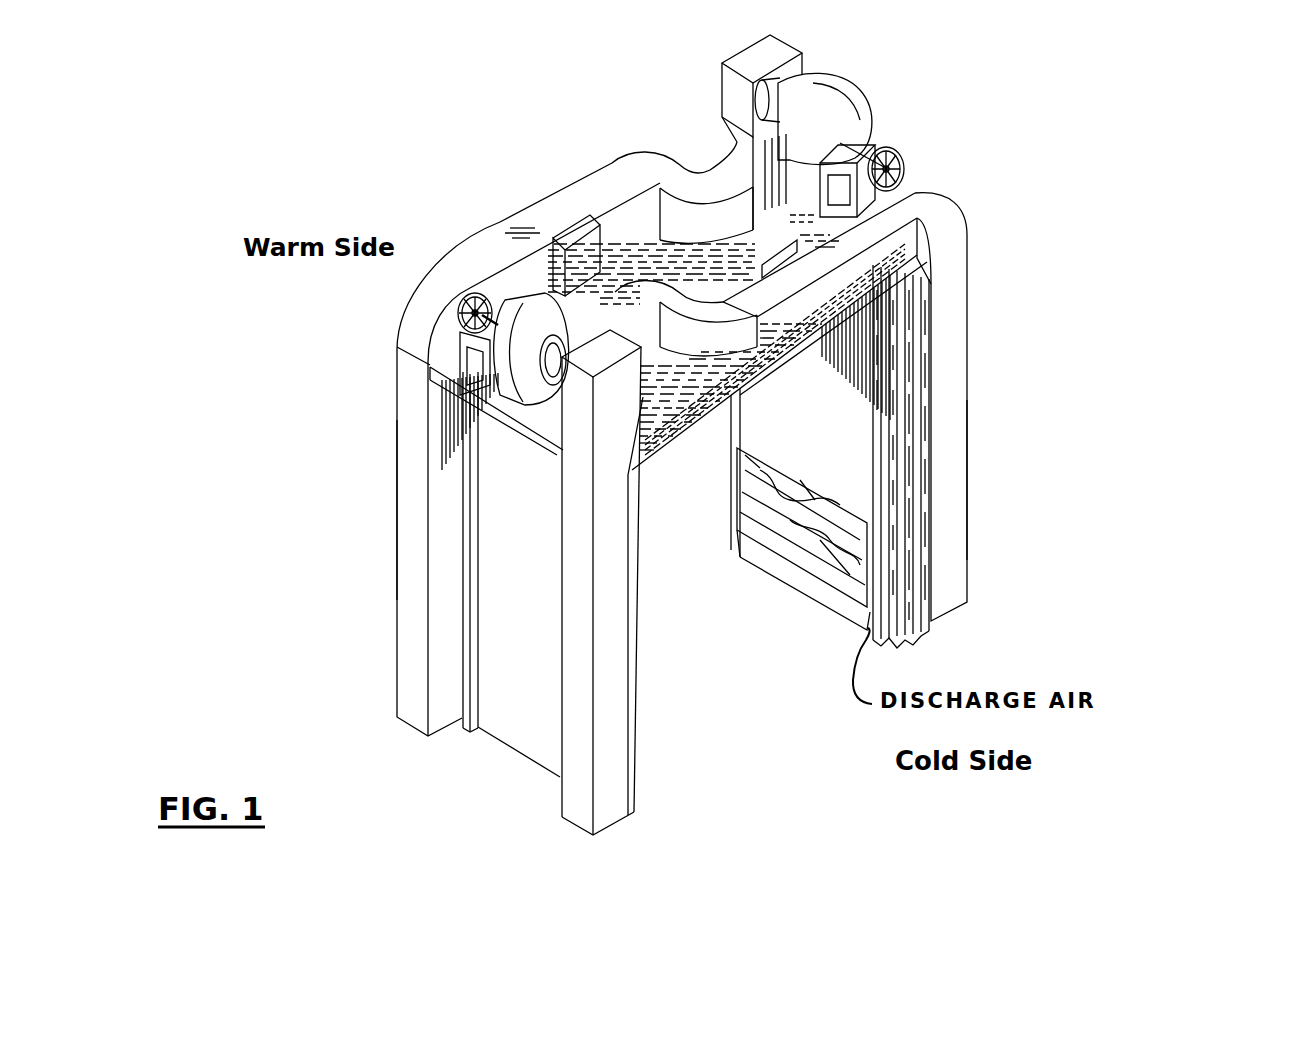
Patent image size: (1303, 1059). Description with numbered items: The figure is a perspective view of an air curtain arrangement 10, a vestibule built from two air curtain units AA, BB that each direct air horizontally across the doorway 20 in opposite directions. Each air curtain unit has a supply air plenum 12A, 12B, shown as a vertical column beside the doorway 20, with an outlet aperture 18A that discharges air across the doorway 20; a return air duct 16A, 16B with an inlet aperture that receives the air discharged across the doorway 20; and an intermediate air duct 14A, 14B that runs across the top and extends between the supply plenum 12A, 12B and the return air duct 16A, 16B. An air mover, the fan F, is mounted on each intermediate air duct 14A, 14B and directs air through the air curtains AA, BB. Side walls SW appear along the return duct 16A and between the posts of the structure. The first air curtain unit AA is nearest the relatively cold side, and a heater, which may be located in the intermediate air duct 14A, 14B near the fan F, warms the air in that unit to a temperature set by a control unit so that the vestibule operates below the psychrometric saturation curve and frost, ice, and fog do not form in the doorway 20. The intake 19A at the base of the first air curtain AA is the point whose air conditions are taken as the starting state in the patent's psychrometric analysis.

The air curtain arrangement 10 is at (497, 118).
The supply air plenum 12A is at (956, 545).
The supply air plenum 12B is at (413, 640).
The intermediate air duct 14A is at (878, 258).
The intermediate air duct 14B is at (560, 220).
The return air duct 16A is at (608, 720).
The return air duct 16B is at (737, 441).
The outlet aperture 18A is at (888, 662).
The intake 19A is at (637, 792).
The doorway 20 is at (710, 686).
The fan F is at (826, 112).
The side wall SW is at (795, 555).
The first air curtain unit AA is at (945, 383).
The second air curtain unit BB is at (413, 496).